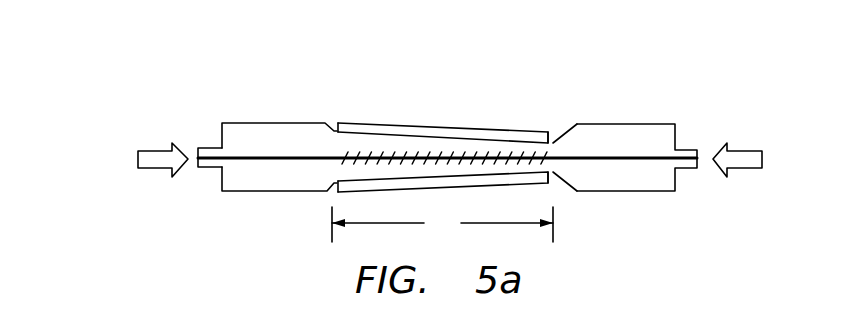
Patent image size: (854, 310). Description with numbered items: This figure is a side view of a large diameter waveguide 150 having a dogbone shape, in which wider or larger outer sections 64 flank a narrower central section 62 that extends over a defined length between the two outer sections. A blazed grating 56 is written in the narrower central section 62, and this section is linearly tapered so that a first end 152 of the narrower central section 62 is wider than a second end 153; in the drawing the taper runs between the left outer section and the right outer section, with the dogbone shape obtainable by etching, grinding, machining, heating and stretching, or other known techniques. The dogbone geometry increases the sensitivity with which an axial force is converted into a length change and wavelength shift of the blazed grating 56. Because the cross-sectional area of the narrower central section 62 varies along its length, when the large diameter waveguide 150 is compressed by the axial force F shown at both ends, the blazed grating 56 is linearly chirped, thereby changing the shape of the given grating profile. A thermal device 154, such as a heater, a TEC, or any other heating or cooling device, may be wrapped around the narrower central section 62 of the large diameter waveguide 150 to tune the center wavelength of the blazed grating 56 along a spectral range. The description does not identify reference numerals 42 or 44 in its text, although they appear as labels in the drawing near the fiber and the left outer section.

The large diameter waveguide 150 is at (499, 78).
The outer sections 64 is at (273, 122).
The first end 152 is at (333, 130).
The narrower central section 62 is at (369, 121).
The blazed grating 56 is at (386, 158).
The thermal device 154 is at (538, 128).
The second end 153 is at (560, 137).
The optical fiber 42 is at (247, 160).
The sleeve body 44 is at (270, 191).